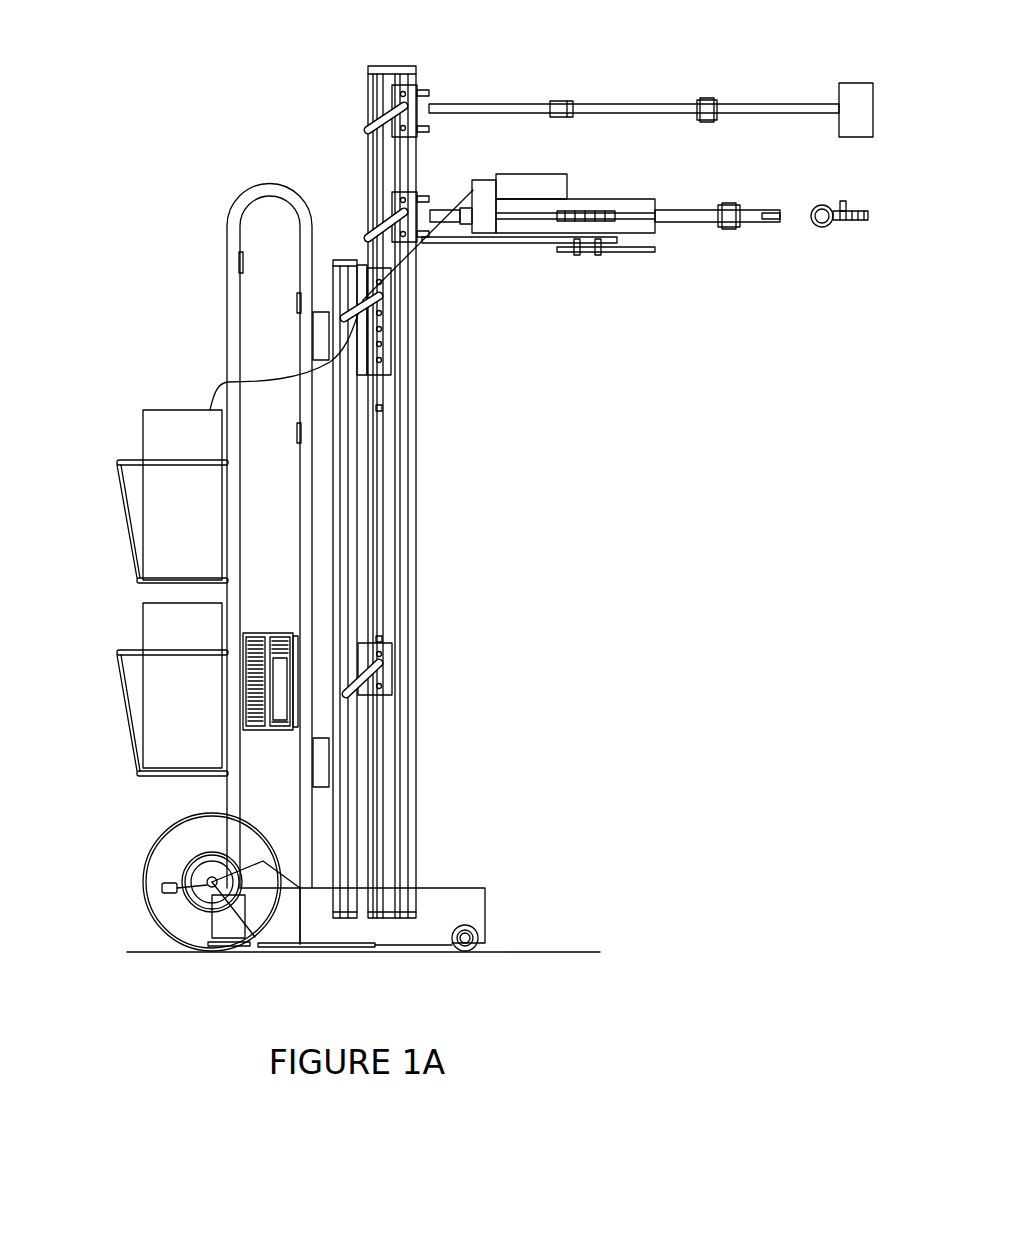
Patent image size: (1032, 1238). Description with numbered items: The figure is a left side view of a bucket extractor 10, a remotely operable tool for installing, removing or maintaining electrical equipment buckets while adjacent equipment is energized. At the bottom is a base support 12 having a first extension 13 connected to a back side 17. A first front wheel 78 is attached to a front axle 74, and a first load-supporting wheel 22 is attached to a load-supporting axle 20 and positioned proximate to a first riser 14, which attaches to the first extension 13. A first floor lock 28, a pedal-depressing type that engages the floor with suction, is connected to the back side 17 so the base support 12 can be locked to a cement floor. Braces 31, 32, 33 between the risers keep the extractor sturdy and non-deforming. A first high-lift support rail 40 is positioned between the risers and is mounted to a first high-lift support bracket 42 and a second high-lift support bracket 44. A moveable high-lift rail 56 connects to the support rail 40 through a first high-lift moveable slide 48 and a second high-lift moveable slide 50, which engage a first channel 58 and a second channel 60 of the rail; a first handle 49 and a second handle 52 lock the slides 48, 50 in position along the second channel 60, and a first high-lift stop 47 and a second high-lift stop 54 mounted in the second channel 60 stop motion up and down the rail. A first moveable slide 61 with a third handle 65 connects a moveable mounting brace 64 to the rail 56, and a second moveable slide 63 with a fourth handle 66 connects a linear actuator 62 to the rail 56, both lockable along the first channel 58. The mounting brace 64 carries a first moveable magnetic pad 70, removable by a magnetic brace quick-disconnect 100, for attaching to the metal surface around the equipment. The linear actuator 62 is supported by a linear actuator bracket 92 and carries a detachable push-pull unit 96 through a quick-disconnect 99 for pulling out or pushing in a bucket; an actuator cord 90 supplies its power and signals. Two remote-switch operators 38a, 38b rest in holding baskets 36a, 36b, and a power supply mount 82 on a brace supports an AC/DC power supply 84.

The bucket extractor 10 is at (176, 136).
The base support 12 is at (418, 917).
The first extension 13 is at (470, 903).
The first riser 14 is at (238, 214).
The back side 17 is at (275, 937).
The load-supporting axle 20 is at (212, 872).
The first load-supporting wheel 22 is at (170, 848).
The first floor lock 28 is at (228, 930).
The brace 31 is at (238, 262).
The brace 32 is at (297, 304).
The brace 33 is at (297, 433).
The holding basket 36a is at (125, 461).
The holding basket 36b is at (125, 651).
The remote-switch operator 38a is at (165, 410).
The remote-switch operator 38b is at (152, 607).
The first high-lift support rail 40 is at (331, 525).
The first high-lift support bracket 42 is at (313, 337).
The second high-lift support bracket 44 is at (320, 770).
The first high-lift stop 47 is at (381, 410).
The first high-lift moveable slide 48 is at (392, 368).
The first handle 49 is at (393, 319).
The second high-lift moveable slide 50 is at (393, 705).
The second handle 52 is at (393, 668).
The second high-lift stop 54 is at (393, 650).
The moveable high-lift rail 56 is at (438, 492).
The first channel 58 is at (403, 850).
The second channel 60 is at (380, 813).
The first moveable slide 61 is at (396, 92).
The linear actuator 62 is at (640, 205).
The second moveable slide 63 is at (397, 191).
The moveable mounting brace 64 is at (596, 104).
The third handle 65 is at (385, 110).
The fourth handle 66 is at (383, 224).
The first moveable magnetic pad 70 is at (855, 90).
The front axle 74 is at (466, 942).
The first front wheel 78 is at (456, 948).
The power supply mount 82 is at (269, 668).
The AC/DC power supply 84 is at (278, 640).
The actuator cord 90 is at (220, 384).
The linear actuator bracket 92 is at (640, 252).
The detachable push-pull unit 96 is at (820, 206).
The quick-disconnect 99 is at (726, 204).
The magnetic brace quick-disconnect 100 is at (705, 99).